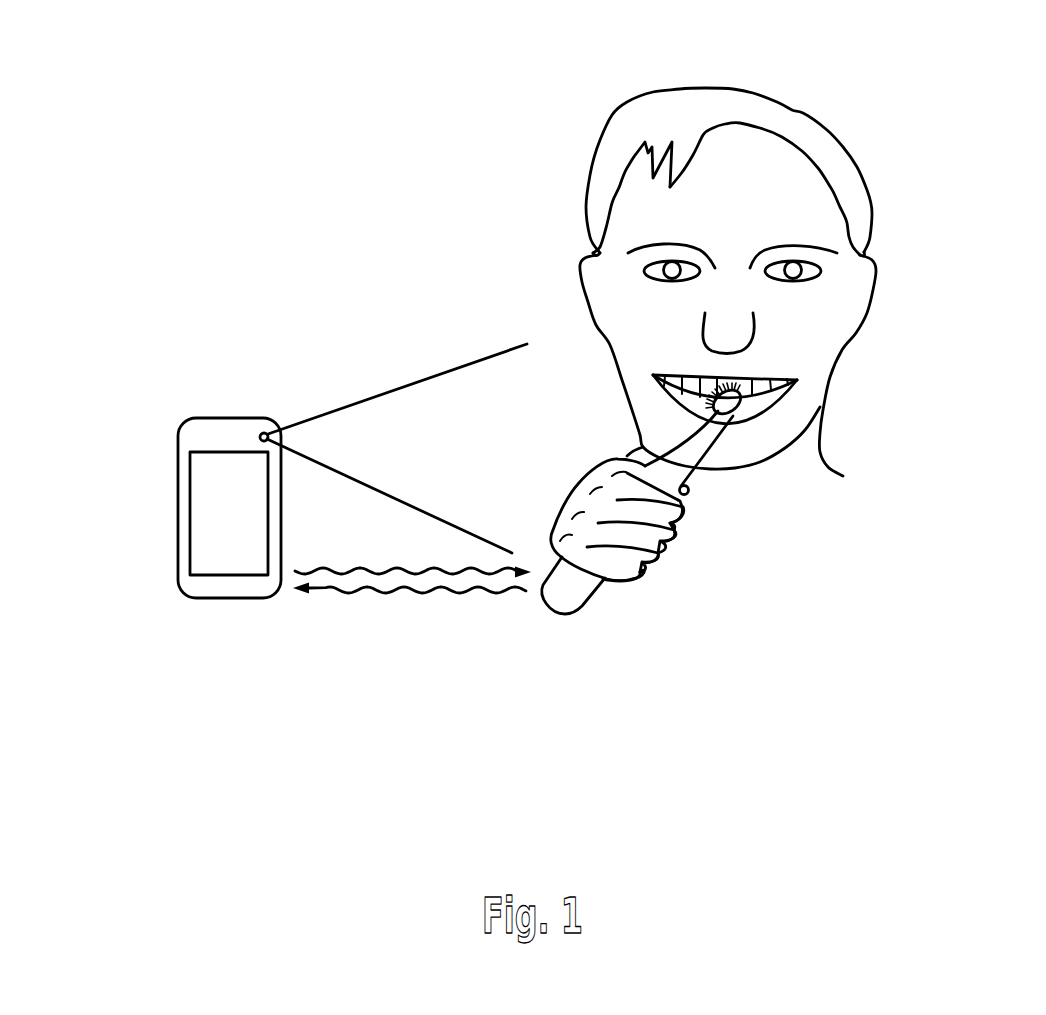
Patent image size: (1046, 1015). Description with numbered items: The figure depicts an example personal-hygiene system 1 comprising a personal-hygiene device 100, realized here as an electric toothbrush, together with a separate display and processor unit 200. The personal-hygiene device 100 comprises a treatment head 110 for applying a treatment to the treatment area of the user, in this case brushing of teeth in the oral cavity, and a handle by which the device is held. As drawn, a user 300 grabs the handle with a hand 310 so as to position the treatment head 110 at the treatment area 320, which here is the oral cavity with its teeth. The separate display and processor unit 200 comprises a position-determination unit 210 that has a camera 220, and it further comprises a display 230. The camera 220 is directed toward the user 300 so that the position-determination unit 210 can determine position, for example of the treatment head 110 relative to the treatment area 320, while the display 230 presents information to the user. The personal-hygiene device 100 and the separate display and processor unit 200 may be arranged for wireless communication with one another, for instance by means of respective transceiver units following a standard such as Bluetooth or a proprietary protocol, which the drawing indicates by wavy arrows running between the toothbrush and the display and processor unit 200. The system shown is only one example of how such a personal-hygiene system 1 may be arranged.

The personal-hygiene system 1 is at (394, 708).
The personal-hygiene device 100 is at (686, 562).
The treatment head 110 is at (736, 409).
The separate display and processor unit 200 is at (301, 539).
The position-determination unit 210 is at (177, 455).
The camera 220 is at (264, 433).
The display 230 is at (203, 527).
The user 300 is at (690, 242).
The hand 310 is at (570, 495).
The treatment area 320 is at (752, 370).